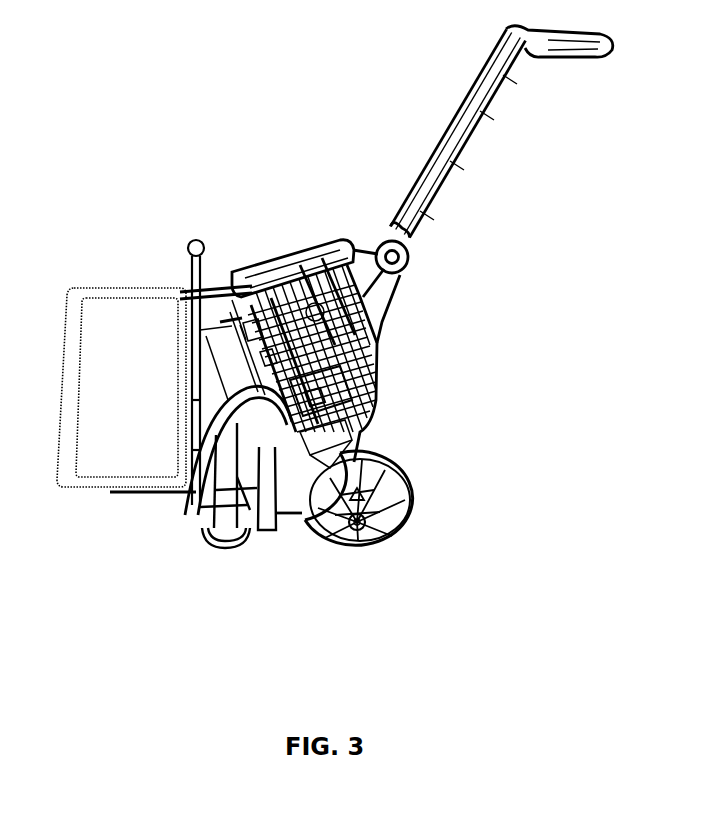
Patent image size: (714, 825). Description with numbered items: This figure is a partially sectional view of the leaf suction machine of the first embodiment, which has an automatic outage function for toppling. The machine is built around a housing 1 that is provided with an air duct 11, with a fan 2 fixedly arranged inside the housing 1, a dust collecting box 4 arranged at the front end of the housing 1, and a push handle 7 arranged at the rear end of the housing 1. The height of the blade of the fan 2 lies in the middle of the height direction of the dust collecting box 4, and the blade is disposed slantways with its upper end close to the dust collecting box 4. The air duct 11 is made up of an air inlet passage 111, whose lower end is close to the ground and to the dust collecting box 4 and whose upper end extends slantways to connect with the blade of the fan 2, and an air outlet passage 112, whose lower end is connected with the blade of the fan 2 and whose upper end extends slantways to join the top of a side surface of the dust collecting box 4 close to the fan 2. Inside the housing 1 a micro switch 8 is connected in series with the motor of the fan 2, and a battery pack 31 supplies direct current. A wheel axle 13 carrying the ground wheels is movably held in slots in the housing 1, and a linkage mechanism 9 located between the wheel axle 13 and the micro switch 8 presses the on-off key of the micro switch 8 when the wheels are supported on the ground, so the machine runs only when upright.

The housing 1 is at (383, 348).
The fan 2 is at (385, 378).
The dust collecting box 4 is at (108, 316).
The push handle 7 is at (517, 68).
The micro switch 8 is at (342, 463).
The linkage mechanism 9 is at (340, 542).
The air duct 11 is at (232, 525).
The wheel axle 13 is at (370, 542).
The battery pack 31 is at (295, 247).
The air inlet passage 111 is at (252, 537).
The air outlet passage 112 is at (200, 520).